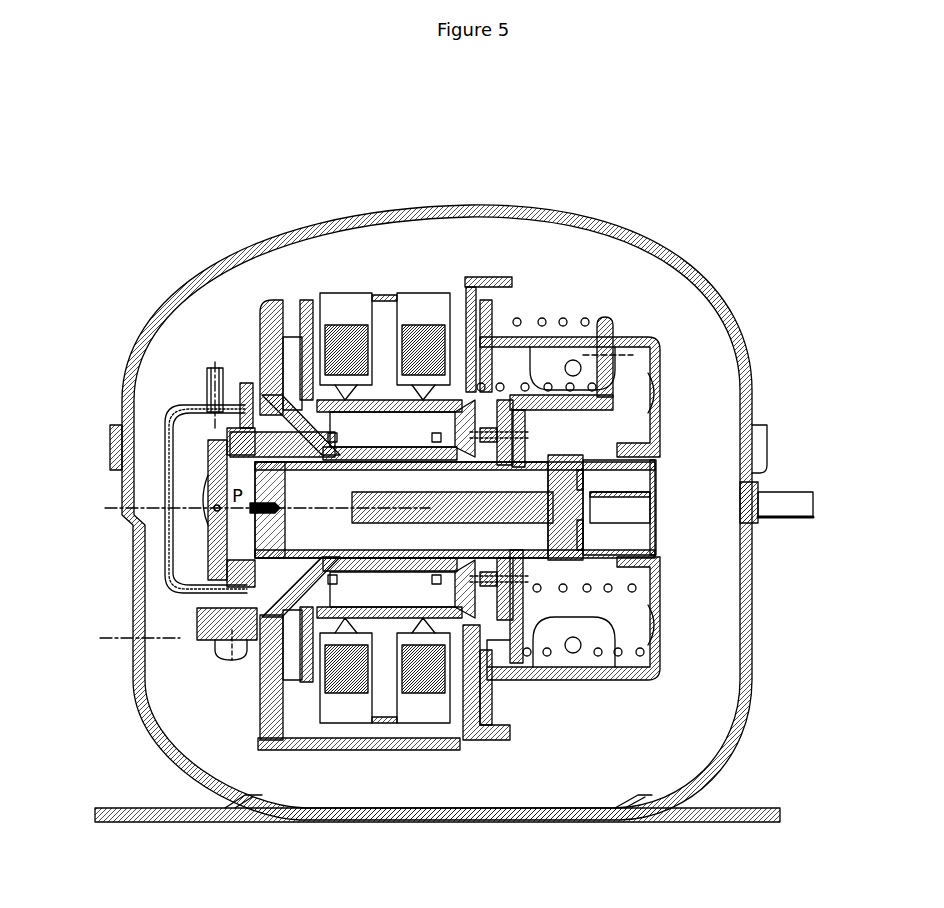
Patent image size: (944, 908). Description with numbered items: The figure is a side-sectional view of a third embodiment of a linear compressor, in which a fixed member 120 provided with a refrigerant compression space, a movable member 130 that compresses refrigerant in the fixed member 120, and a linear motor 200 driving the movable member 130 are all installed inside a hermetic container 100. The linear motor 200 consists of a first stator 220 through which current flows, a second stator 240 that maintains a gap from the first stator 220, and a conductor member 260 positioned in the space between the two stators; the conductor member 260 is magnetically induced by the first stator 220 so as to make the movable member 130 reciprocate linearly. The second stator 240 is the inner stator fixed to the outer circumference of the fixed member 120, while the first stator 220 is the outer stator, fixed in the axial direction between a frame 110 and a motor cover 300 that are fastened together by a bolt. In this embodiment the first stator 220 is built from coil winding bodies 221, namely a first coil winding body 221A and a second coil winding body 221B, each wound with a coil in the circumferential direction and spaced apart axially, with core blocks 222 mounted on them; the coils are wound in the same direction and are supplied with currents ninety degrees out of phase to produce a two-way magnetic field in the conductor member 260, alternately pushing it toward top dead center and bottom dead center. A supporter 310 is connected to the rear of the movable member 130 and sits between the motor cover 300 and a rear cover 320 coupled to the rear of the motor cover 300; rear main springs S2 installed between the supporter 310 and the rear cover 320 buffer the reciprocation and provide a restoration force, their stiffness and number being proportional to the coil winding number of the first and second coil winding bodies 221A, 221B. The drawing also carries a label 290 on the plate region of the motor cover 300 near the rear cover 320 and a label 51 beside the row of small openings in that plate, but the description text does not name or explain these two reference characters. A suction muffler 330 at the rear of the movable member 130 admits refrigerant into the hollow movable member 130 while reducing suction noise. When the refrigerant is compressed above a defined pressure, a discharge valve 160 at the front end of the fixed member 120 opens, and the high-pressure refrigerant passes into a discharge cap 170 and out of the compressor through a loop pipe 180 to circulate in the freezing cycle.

The hermetic container 100 is at (735, 318).
The frame 110 is at (278, 308).
The fixed member 120 is at (372, 562).
The movable member 130 is at (398, 555).
The discharge valve 160 is at (205, 502).
The discharge cap 170 is at (205, 470).
The loop pipe 180 is at (235, 410).
The linear motor 200 is at (498, 98).
The first stator 220 is at (428, 125).
The coil winding bodies 221 is at (457, 158).
The first coil winding body 221A is at (366, 310).
The second coil winding body 221B is at (430, 310).
The core blocks 222 is at (320, 288).
The second stator 240 is at (440, 437).
The conductor member 260 is at (308, 295).
The support plate 290 is at (517, 322).
The motor cover 300 is at (505, 282).
The supporter 310 is at (610, 318).
The rear cover 320 is at (662, 390).
The suction muffler 330 is at (656, 548).
The bolt holes 51 is at (553, 325).
The rear main springs S2 is at (655, 680).